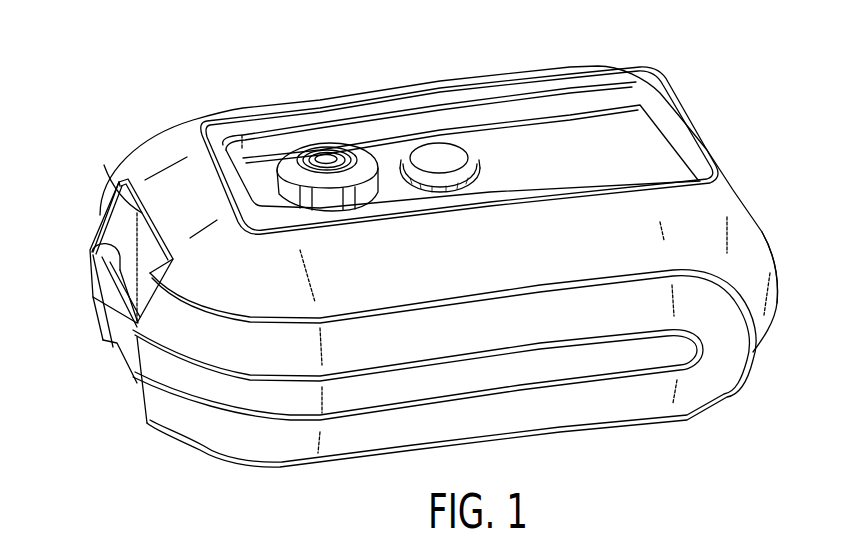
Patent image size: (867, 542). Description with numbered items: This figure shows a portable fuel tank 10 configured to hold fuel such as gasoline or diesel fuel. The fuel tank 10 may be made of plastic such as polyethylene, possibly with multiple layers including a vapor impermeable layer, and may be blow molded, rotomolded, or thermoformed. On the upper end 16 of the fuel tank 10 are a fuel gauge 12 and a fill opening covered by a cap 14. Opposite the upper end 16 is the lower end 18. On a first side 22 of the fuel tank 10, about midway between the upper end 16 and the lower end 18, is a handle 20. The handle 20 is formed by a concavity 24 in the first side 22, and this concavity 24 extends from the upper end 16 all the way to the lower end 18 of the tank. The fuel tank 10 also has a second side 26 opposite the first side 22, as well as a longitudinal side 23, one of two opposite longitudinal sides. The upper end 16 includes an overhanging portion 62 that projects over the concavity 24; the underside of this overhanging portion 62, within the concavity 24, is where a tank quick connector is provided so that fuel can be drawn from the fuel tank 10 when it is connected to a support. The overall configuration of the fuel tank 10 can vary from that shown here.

The portable fuel tank 10 is at (697, 224).
The fuel gauge 12 is at (437, 157).
The cap 14 is at (328, 155).
The upper end 16 is at (243, 103).
The lower end 18 is at (556, 438).
The handle 20 is at (103, 292).
The first side 22 is at (84, 239).
The longitudinal side 23 is at (617, 361).
The concavity 24 is at (140, 397).
The second side 26 is at (770, 234).
The overhanging portion 62 is at (92, 195).